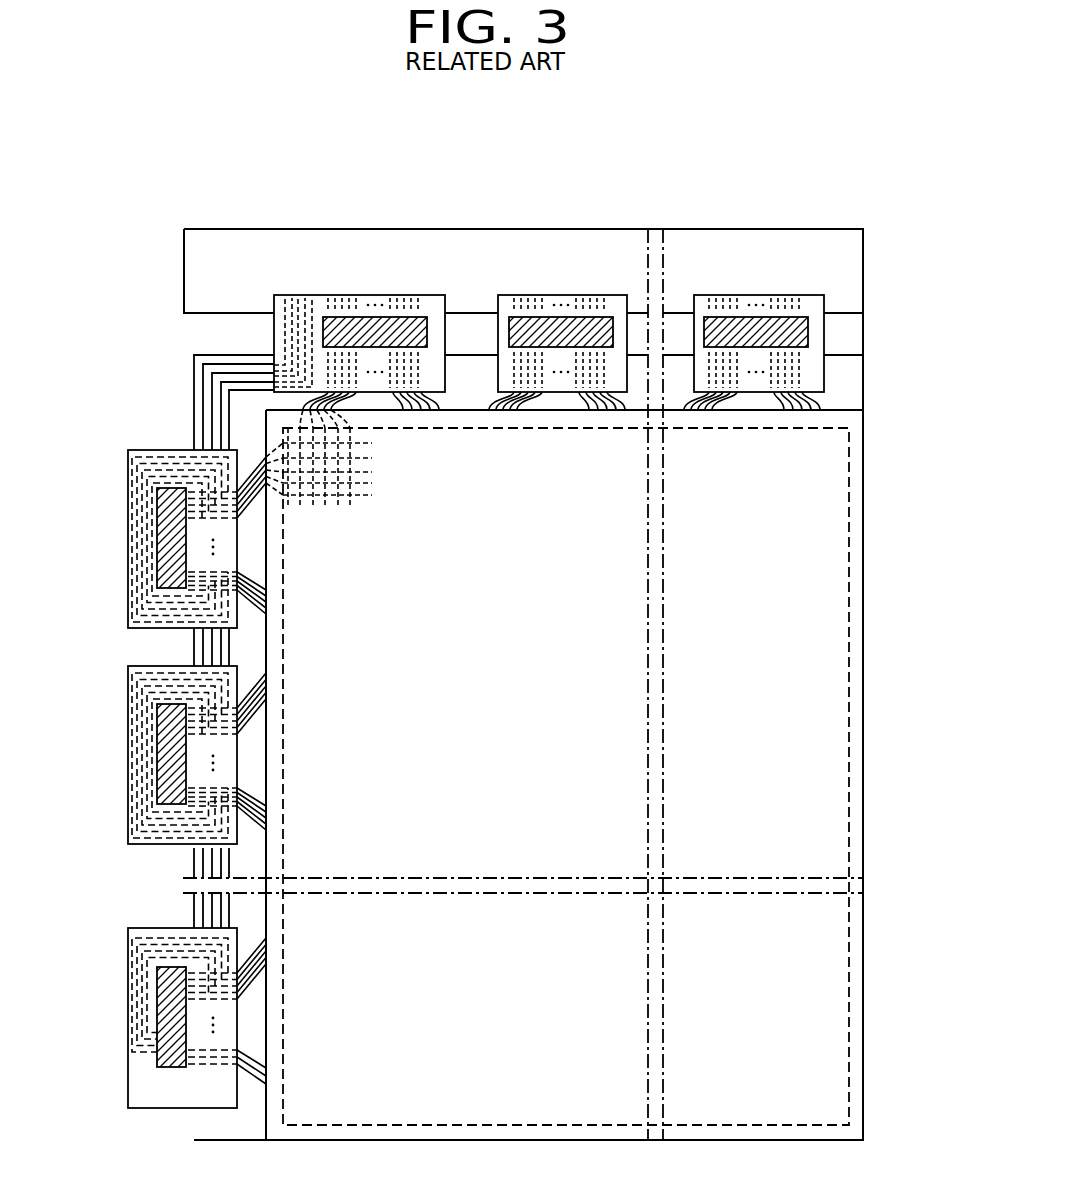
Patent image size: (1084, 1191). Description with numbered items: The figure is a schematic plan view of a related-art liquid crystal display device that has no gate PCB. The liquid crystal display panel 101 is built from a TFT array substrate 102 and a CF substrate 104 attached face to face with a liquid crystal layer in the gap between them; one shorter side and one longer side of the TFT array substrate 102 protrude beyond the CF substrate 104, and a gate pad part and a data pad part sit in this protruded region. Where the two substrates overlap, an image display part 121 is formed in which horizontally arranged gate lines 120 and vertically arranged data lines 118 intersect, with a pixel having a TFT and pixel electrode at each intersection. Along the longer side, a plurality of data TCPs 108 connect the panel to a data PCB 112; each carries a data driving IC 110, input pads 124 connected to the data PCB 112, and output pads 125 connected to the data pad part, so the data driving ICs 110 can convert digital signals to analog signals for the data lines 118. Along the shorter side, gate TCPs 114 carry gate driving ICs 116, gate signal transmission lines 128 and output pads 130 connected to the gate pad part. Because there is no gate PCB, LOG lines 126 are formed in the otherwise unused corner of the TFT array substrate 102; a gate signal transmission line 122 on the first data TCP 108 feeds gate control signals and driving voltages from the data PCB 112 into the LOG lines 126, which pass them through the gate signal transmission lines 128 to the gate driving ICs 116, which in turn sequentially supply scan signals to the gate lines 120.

The liquid crystal display panel 101 is at (870, 568).
The TFT array substrate 102 is at (857, 406).
The CF substrate 104 is at (857, 450).
The data TCP 108 is at (825, 371).
The data driving IC 110 is at (808, 328).
The data PCB 112 is at (857, 271).
The gate TCP 114 is at (128, 562).
The gate driving IC 116 is at (157, 522).
The data lines 118 is at (330, 506).
The gate lines 120 is at (362, 481).
The image display part 121 is at (470, 648).
The gate signal transmission line 122 is at (274, 338).
The input pads 124 is at (422, 307).
The output pads 125 is at (421, 370).
The LOG lines 126 is at (194, 394).
The gate signal transmission lines 128 is at (132, 490).
The output pads 130 is at (215, 590).